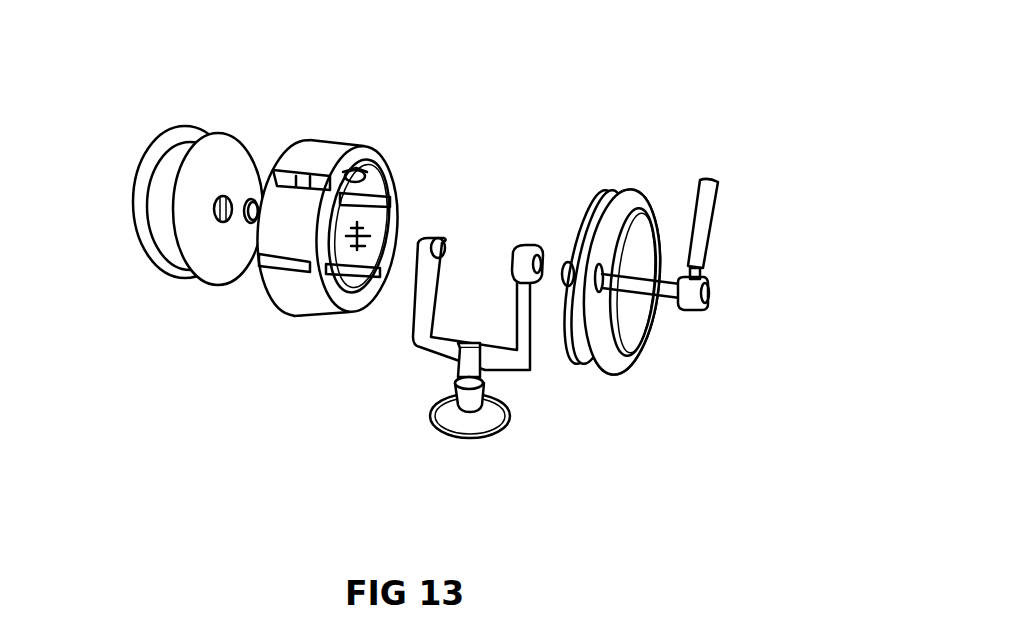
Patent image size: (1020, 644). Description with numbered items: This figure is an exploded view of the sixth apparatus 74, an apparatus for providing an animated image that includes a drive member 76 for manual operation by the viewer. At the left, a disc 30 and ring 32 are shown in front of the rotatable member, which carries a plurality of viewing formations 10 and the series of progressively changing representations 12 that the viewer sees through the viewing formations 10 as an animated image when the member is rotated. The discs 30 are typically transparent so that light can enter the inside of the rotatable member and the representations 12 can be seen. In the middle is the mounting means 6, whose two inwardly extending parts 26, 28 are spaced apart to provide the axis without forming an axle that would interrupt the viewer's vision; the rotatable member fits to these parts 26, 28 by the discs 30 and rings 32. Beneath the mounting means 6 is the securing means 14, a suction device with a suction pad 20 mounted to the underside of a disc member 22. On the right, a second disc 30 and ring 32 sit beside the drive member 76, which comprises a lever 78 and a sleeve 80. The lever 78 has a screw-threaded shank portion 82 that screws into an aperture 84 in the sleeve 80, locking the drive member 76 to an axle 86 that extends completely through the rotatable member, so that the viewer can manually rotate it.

The mounting means 6 is at (528, 317).
The viewing formations 10 is at (303, 272).
The progressively changing representations 12 is at (372, 187).
The securing means 14 is at (405, 410).
The suction pad 20 is at (480, 430).
The disc member 22 is at (458, 417).
The inwardly extending part 26 is at (440, 238).
The inwardly extending part 28 is at (513, 245).
The disc 30 is at (203, 247).
The ring 32 is at (140, 208).
The sixth apparatus 74 is at (553, 93).
The drive member 76 is at (798, 177).
The lever 78 is at (713, 193).
The sleeve 80 is at (688, 300).
The screw-threaded shank portion 82 is at (702, 270).
The aperture 84 is at (698, 278).
The axle 86 is at (641, 285).